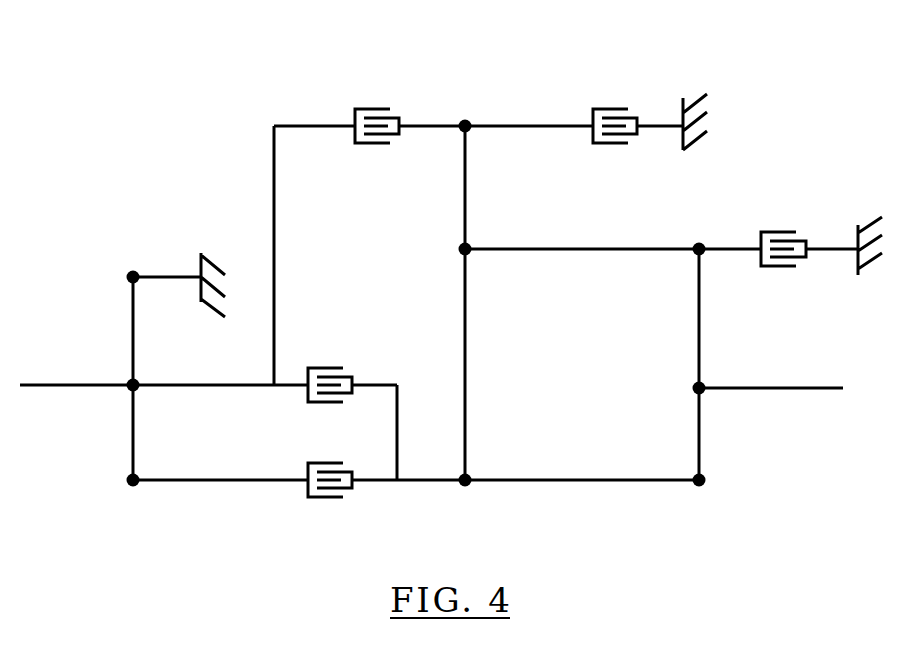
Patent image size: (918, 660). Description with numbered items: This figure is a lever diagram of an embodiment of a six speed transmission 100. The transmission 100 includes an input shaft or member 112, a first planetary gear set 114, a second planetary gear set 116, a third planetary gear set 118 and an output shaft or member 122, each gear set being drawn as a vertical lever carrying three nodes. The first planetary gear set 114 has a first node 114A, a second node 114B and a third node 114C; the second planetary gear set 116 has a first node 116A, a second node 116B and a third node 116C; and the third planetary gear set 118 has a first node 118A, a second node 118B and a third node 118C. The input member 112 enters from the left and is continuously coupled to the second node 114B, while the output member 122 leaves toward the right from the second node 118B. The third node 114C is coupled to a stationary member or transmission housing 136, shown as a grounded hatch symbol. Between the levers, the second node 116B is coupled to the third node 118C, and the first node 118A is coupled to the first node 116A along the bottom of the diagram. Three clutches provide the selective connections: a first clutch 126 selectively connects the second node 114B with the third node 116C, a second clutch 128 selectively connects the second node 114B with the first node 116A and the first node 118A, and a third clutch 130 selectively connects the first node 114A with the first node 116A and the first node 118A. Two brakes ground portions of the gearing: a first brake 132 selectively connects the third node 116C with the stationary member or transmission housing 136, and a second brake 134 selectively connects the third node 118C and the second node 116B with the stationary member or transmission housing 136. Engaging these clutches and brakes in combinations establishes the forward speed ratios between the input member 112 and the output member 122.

The six speed transmission 100 is at (793, 98).
The input shaft or member 112 is at (37, 389).
The first planetary gear set 114 is at (117, 501).
The first node of the first planetary gear set 114A is at (135, 487).
The second node of the first planetary gear set 114B is at (138, 380).
The third node of the first planetary gear set 114C is at (131, 272).
The second planetary gear set 116 is at (452, 502).
The first node of the second planetary gear set 116A is at (468, 487).
The second node of the second planetary gear set 116B is at (460, 249).
The third node of the second planetary gear set 116C is at (464, 120).
The third planetary gear set 118 is at (682, 502).
The first node of the third planetary gear set 118A is at (702, 487).
The second node of the third planetary gear set 118B is at (694, 388).
The third node of the third planetary gear set 118C is at (697, 243).
The output shaft or member 122 is at (826, 392).
The first clutch 126 is at (365, 107).
The second clutch 128 is at (328, 366).
The third clutch 130 is at (324, 500).
The first brake 132 is at (600, 107).
The second brake 134 is at (770, 230).
The stationary member or transmission housing 136 is at (214, 262).